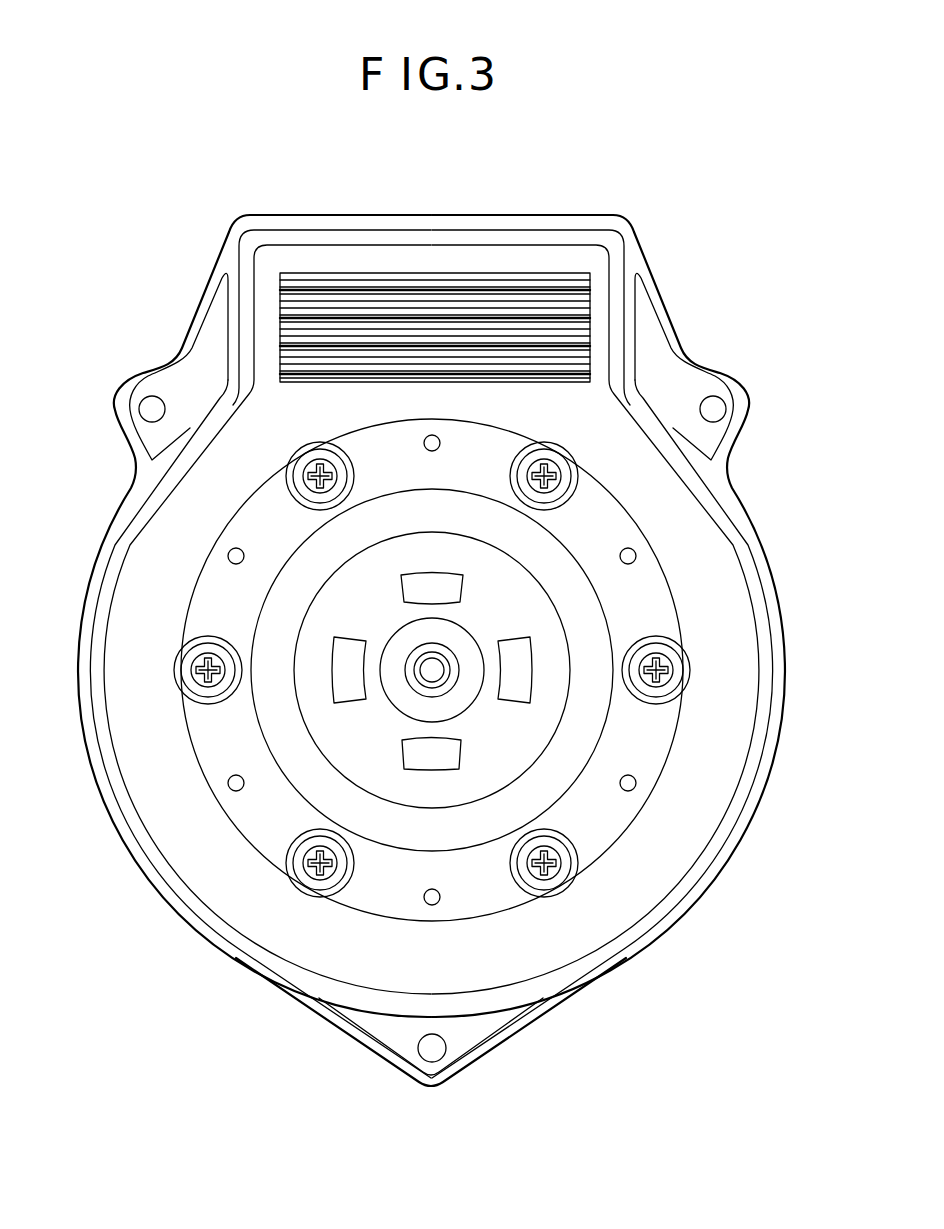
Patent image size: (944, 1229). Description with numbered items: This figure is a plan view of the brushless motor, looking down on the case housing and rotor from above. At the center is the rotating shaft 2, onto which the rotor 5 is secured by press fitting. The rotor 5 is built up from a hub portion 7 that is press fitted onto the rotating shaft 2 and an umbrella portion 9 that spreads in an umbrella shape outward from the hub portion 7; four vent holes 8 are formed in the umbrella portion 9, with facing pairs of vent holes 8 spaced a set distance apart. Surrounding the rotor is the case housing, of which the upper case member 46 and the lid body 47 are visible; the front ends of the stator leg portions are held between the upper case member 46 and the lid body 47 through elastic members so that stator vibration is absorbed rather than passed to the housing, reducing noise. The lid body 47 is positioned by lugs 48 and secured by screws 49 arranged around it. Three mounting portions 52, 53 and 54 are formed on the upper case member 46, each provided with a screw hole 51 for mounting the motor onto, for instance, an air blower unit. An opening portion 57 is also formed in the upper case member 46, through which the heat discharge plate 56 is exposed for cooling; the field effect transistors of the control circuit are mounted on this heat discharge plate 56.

The rotating shaft 2 is at (437, 674).
The rotor 5 is at (545, 722).
The hub portion 7 is at (420, 705).
The vent holes 8 is at (410, 588).
The umbrella portion 9 is at (580, 762).
The upper case member 46 is at (738, 730).
The lid body 47 is at (658, 605).
The lugs 48 is at (440, 441).
The screws 49 is at (320, 462).
The screw hole 51 is at (152, 409).
The mounting portion 52 is at (498, 1062).
The mounting portion 53 is at (743, 442).
The mounting portion 54 is at (143, 373).
The heat discharge plate 56 is at (385, 327).
The opening portion 57 is at (296, 300).